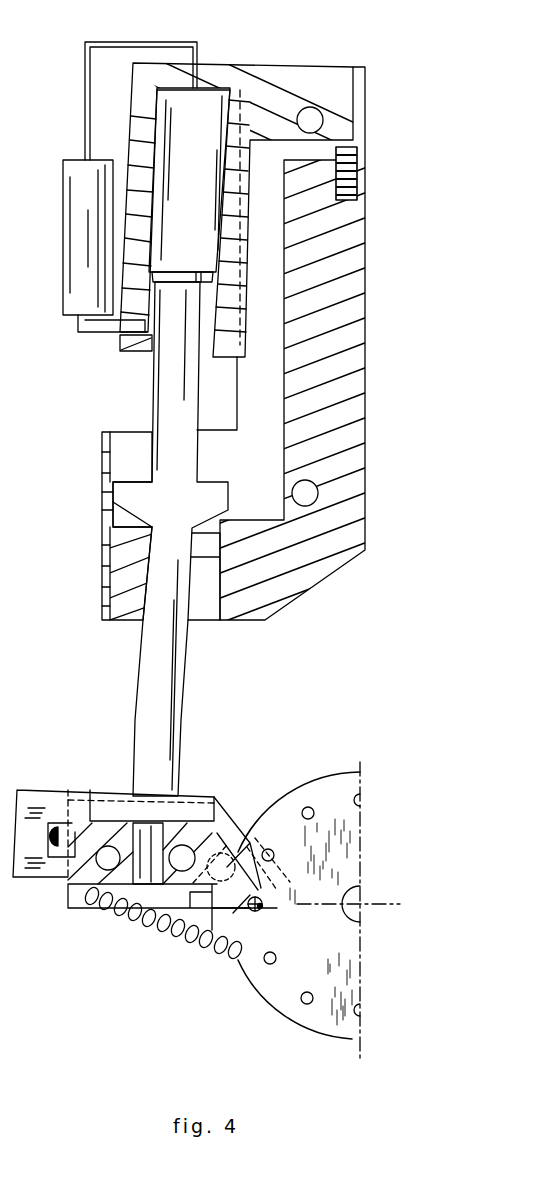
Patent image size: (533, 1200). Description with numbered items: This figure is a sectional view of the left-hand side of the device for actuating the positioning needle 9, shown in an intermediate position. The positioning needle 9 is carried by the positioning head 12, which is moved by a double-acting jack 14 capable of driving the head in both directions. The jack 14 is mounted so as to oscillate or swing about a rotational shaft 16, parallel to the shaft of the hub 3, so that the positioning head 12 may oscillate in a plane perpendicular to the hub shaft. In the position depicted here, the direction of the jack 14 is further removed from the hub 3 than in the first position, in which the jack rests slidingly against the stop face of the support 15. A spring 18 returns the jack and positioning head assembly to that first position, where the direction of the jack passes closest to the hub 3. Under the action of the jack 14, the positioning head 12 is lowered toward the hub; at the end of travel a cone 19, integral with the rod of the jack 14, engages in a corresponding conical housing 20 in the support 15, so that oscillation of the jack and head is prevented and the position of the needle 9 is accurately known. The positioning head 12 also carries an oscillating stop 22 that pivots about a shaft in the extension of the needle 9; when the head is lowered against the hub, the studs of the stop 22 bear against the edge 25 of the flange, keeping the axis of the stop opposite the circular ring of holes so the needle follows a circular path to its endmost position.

The hub 3 is at (322, 822).
The positioning needle 9 is at (240, 958).
The positioning head 12 is at (76, 788).
The jack 14 is at (190, 113).
The support 15 is at (342, 246).
The rotational shaft 16 is at (313, 118).
The spring 18 is at (362, 152).
The cone 19 is at (162, 502).
The conical housing 20 is at (130, 537).
The oscillating stop 22 is at (238, 958).
The edge of flange 25 is at (278, 792).